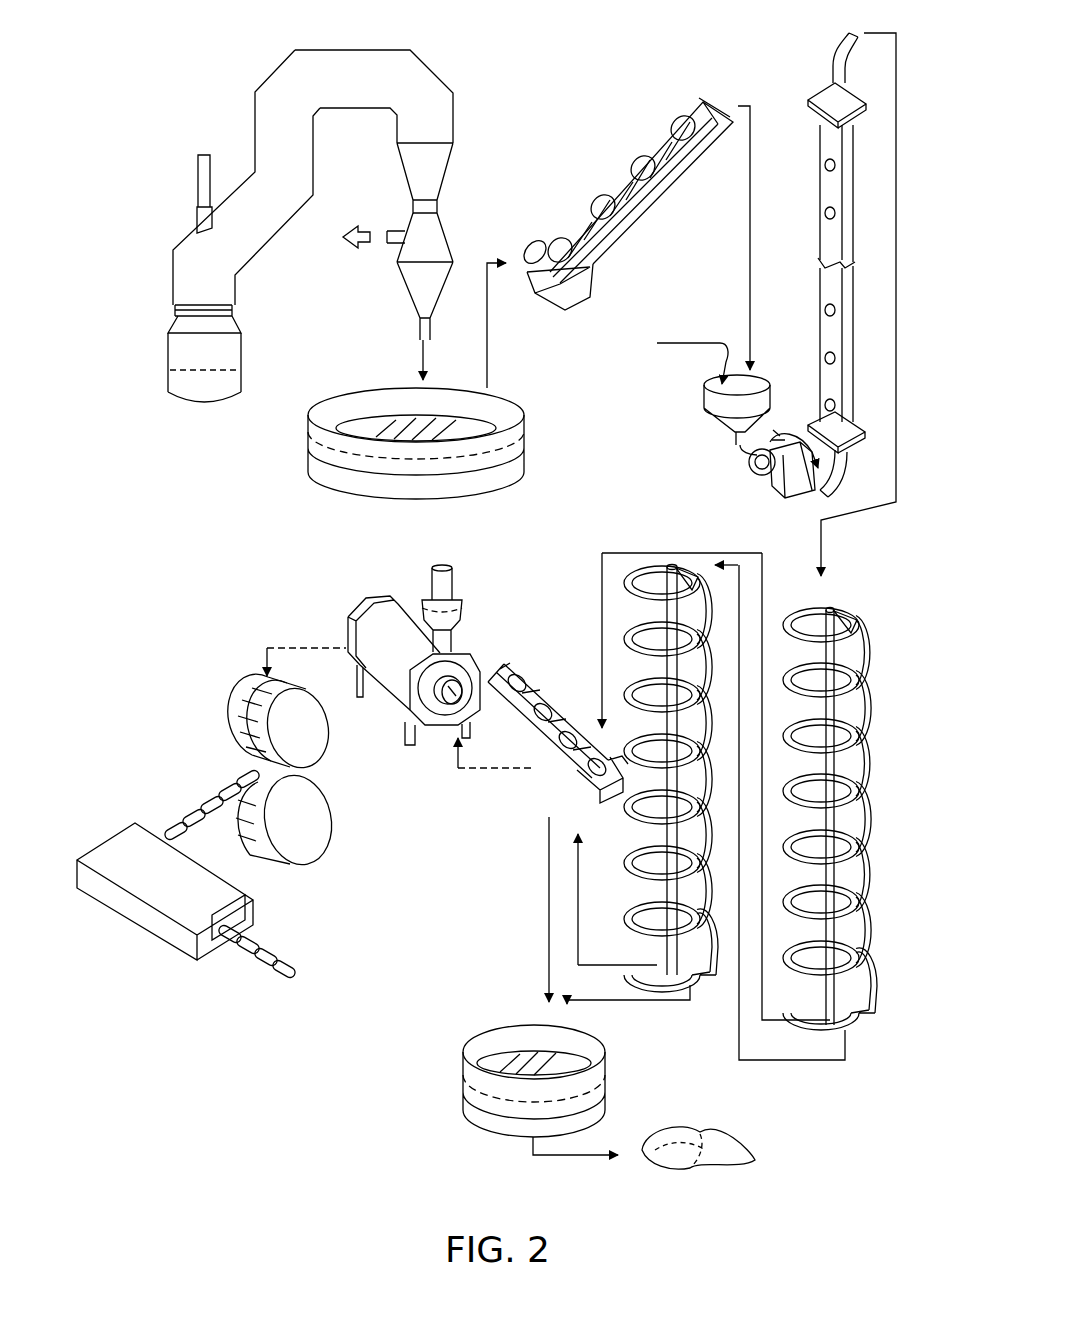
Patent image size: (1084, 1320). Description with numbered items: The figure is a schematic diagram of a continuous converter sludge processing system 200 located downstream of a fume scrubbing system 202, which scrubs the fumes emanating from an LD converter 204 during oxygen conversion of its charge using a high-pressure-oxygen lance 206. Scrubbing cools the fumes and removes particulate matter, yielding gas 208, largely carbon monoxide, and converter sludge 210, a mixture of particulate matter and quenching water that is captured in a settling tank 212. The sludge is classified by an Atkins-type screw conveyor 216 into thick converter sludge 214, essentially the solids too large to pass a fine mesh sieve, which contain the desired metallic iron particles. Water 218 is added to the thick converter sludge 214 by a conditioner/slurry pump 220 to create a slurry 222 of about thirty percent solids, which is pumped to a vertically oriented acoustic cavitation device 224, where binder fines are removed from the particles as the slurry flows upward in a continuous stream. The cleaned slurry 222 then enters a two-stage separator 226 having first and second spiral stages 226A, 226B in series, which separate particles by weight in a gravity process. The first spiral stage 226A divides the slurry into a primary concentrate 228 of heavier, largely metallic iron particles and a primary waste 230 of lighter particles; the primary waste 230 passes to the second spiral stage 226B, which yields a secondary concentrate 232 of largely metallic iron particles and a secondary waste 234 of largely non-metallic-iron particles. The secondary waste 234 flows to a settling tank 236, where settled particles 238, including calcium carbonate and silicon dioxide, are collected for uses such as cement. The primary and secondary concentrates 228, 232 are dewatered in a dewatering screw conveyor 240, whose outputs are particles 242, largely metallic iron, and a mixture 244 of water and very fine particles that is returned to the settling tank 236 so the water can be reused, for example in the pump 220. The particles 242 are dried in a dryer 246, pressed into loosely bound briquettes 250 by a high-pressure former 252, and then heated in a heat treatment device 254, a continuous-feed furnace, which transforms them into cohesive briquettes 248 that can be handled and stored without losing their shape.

The converter sludge processing system 200 is at (634, 33).
The fume scrubbing system 202 is at (455, 170).
The LD converter 204 is at (166, 362).
The high-pressure-oxygen lance 206 is at (196, 173).
The gas 208 is at (358, 251).
The converter sludge 210 is at (420, 352).
The settling tank 212 is at (302, 440).
The thick converter sludge 214 is at (750, 267).
The Atkins-type screw conveyor 216 is at (655, 147).
The water 218 is at (702, 343).
The conditioner/slurry pump 220 is at (742, 470).
The slurry 222 is at (712, 438).
The acoustic cavitation device 224 is at (815, 120).
The two-stage separator 226 is at (884, 972).
The first spiral stage 226A is at (878, 652).
The second spiral stage 226B is at (607, 634).
The primary concentrate 228 is at (800, 1024).
The primary waste 230 is at (768, 1062).
The secondary concentrate 232 is at (598, 968).
The secondary waste 234 is at (632, 1000).
The settling tank 236 is at (456, 1110).
The particles 238 is at (700, 1170).
The dewatering screw conveyor 240 is at (567, 766).
The particles 242 is at (460, 800).
The mixture 244 is at (547, 883).
The dryer 246 is at (345, 604).
The cohesive briquettes 248 is at (292, 957).
The loosely bound briquettes 250 is at (182, 812).
The high-pressure former 252 is at (232, 731).
The heat treatment device 254 is at (129, 927).